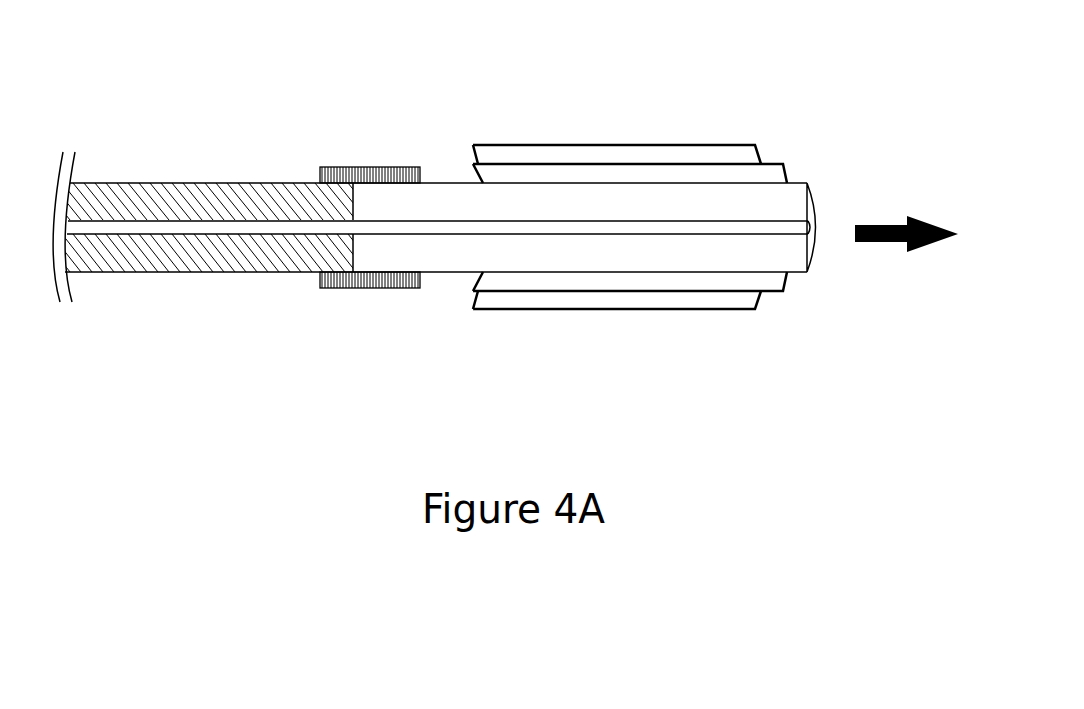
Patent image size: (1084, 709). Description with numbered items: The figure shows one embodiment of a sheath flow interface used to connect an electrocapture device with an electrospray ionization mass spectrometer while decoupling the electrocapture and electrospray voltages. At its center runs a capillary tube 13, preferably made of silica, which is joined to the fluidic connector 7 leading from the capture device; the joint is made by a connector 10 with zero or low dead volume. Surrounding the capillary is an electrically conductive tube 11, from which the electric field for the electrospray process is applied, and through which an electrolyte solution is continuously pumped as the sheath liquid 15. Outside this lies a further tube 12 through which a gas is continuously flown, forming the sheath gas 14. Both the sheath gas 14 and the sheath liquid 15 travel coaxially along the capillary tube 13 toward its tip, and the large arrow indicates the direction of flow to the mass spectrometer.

The fluidic connector 7 is at (147, 273).
The connector 10 is at (335, 168).
The electrically conductive tube 11 is at (642, 292).
The tube 12 is at (700, 311).
The capillary tube 13 is at (813, 187).
The sheath gas 14 is at (637, 155).
The sheath liquid 15 is at (493, 299).